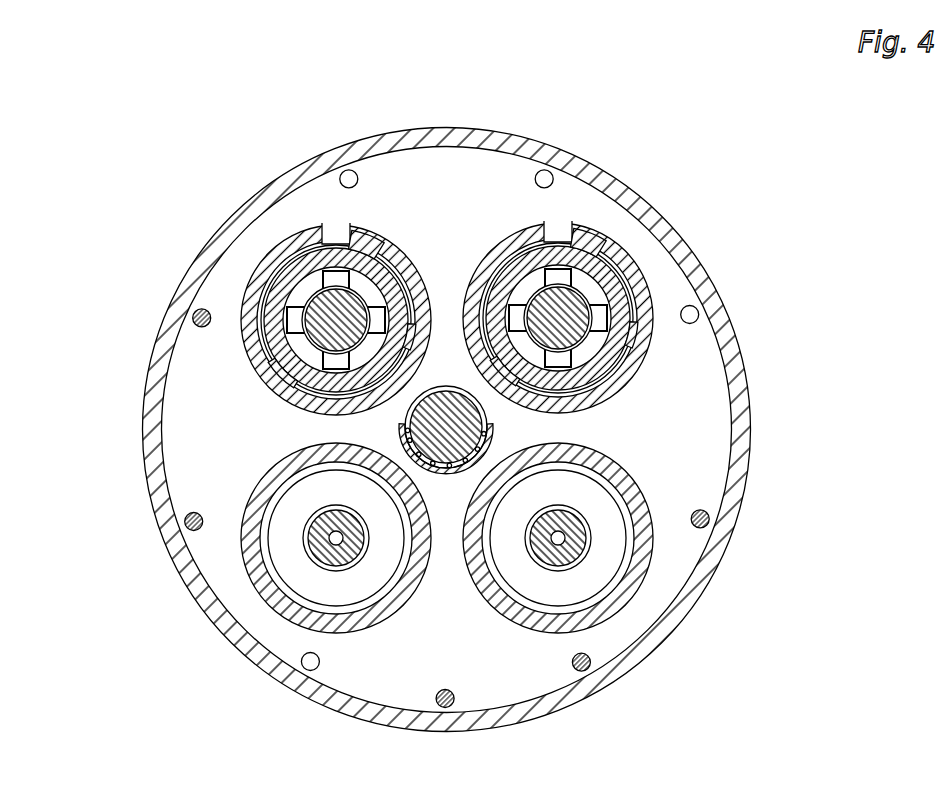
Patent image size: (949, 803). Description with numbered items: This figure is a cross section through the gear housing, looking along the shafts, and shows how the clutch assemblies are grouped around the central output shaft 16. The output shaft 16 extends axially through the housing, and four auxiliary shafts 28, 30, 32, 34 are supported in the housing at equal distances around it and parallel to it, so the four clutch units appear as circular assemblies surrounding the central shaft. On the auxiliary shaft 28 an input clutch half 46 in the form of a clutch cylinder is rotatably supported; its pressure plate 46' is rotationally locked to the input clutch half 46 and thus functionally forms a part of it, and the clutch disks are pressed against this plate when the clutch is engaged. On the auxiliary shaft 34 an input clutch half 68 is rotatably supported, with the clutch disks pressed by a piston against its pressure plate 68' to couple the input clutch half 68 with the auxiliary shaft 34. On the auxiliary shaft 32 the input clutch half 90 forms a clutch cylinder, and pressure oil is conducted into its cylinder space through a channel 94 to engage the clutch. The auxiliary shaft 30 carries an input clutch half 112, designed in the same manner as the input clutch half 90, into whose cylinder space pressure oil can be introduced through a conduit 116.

The output shaft 16 is at (445, 419).
The auxiliary shaft 28 is at (558, 317).
The auxiliary shaft 30 is at (314, 537).
The auxiliary shaft 32 is at (575, 536).
The auxiliary shaft 34 is at (343, 312).
The input clutch half 46 is at (586, 309).
The pressure plate 46' is at (604, 204).
The input clutch half 68 is at (310, 309).
The pressure plate 68' is at (331, 198).
The input clutch half 90 is at (265, 493).
The channel 94 is at (557, 537).
The input clutch half 112 is at (632, 502).
The conduit 116 is at (334, 539).